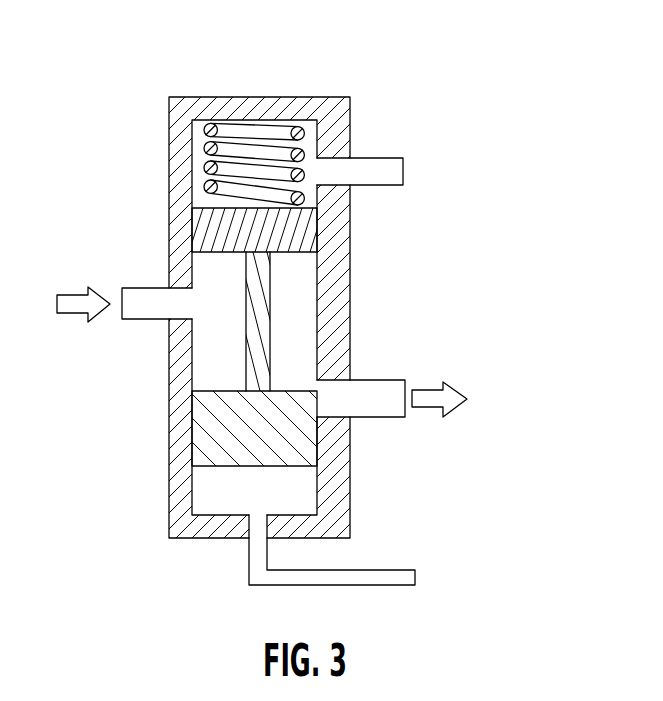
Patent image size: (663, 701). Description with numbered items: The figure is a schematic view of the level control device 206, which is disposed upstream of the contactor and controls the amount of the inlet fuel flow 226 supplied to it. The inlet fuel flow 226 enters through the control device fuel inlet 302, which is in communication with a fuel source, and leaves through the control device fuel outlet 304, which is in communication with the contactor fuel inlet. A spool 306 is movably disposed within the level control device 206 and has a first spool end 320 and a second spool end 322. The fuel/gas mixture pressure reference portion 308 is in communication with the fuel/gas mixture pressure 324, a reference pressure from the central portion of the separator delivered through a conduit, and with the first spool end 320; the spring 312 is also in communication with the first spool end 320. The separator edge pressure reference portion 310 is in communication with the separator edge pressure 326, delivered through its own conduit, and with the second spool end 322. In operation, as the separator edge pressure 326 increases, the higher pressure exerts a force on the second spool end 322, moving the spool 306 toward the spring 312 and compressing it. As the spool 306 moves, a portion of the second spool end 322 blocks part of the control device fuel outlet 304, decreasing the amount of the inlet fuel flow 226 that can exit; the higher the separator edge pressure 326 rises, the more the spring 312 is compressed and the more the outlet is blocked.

The level control device 206 is at (527, 105).
The inlet fuel flow 226 is at (77, 303).
The control device fuel inlet 302 is at (170, 289).
The control device fuel outlet 304 is at (350, 380).
The spool 306 is at (271, 321).
The fuel/gas mixture pressure reference portion 308 is at (310, 168).
The separator edge pressure reference portion 310 is at (227, 492).
The spring 312 is at (240, 147).
The first spool end 320 is at (198, 226).
The second spool end 322 is at (227, 415).
The fuel/gas mixture pressure 324 is at (403, 172).
The separator edge pressure 326 is at (372, 577).